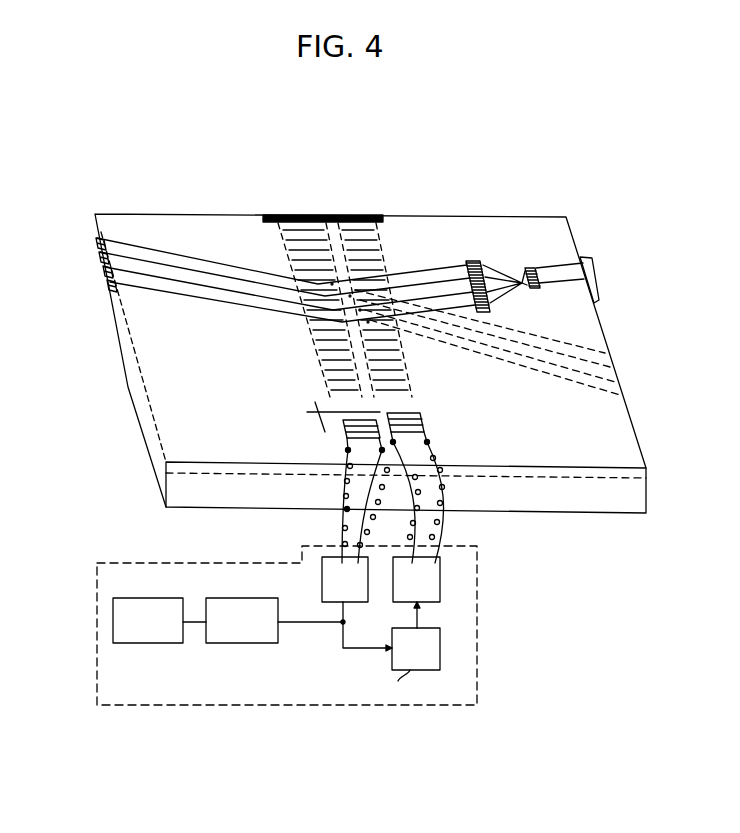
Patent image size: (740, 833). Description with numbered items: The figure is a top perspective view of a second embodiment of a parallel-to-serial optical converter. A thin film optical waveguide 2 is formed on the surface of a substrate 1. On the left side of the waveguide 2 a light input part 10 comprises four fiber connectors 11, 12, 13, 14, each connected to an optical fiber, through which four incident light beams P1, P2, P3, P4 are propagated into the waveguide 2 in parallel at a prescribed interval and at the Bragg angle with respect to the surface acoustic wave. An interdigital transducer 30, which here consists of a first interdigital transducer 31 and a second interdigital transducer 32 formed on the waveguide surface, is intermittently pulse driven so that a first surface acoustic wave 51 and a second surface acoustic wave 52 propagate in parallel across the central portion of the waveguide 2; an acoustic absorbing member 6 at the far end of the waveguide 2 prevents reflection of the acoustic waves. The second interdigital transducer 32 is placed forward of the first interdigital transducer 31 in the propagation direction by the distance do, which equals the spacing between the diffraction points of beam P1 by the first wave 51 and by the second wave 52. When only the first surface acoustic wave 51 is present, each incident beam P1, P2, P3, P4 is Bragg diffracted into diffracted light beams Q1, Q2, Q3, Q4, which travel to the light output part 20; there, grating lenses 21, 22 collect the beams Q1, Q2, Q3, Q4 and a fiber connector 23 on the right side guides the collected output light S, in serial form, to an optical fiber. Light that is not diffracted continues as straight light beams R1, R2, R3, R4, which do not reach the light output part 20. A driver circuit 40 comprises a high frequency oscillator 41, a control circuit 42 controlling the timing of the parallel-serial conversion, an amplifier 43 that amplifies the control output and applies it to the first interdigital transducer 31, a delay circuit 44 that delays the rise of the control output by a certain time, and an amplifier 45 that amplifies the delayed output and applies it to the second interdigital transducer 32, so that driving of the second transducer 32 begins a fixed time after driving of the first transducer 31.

The substrate 1 is at (146, 440).
The thin film optical waveguide 2 is at (242, 470).
The acoustic absorbing member 6 is at (282, 215).
The light input part 10 is at (74, 296).
The fiber connector 11 is at (110, 288).
The fiber connector 12 is at (105, 276).
The fiber connector 13 is at (101, 262).
The fiber connector 14 is at (97, 246).
The light output part 20 is at (546, 232).
The grating lens 21 is at (472, 260).
The grating lens 22 is at (528, 267).
The fiber connector 23 is at (587, 258).
The interdigital transducer 30 is at (378, 488).
The first interdigital transducer 31 is at (347, 436).
The second interdigital transducer 32 is at (425, 430).
The driver circuit 40 is at (287, 658).
The high frequency oscillator 41 is at (145, 643).
The control circuit 42 is at (237, 643).
The amplifier 43 is at (322, 583).
The delay circuit 44 is at (392, 663).
The amplifier 45 is at (440, 572).
The first surface acoustic wave 51 is at (310, 252).
The second surface acoustic wave 52 is at (368, 265).
The incident light beam P1 is at (183, 292).
The incident light beam P2 is at (165, 275).
The incident light beam P3 is at (143, 258).
The incident light beam P4 is at (123, 240).
The diffracted light beam Q1 is at (368, 322).
The diffracted light beam Q2 is at (360, 310).
The diffracted light beam Q3 is at (350, 296).
The diffracted light beam Q4 is at (332, 284).
The straight light beam R1 is at (522, 367).
The straight light beam R2 is at (560, 367).
The straight light beam R3 is at (587, 362).
The straight light beam R4 is at (607, 355).
The output light S is at (560, 277).
The distance do is at (334, 417).